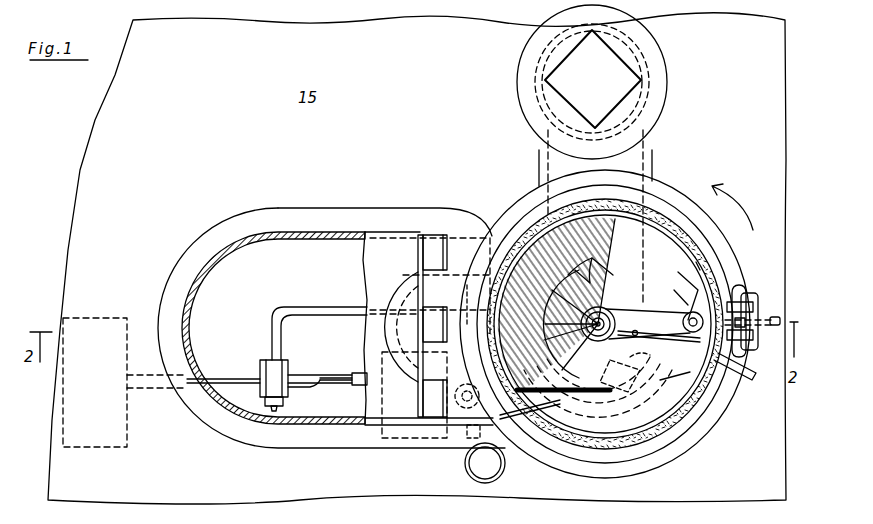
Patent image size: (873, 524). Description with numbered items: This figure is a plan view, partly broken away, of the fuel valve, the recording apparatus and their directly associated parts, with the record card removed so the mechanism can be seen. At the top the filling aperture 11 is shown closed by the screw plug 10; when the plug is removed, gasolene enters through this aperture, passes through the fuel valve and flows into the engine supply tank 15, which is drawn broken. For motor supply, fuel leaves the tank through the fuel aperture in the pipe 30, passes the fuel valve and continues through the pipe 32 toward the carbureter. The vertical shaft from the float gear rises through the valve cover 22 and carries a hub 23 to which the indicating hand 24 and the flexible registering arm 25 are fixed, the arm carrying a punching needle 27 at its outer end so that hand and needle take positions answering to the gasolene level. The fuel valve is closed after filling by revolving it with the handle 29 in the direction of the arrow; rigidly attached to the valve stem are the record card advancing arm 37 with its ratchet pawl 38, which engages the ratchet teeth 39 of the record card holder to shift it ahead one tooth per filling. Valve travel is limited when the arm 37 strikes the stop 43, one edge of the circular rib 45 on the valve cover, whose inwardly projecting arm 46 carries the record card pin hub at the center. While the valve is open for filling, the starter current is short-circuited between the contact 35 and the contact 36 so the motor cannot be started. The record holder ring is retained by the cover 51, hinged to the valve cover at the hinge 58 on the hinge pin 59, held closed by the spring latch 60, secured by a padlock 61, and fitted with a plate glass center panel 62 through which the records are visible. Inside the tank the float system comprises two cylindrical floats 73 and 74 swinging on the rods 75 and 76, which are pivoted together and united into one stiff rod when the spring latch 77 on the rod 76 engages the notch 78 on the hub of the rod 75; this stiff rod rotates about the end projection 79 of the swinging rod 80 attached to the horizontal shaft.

The screw plug 10 is at (593, 79).
The filling aperture 11 is at (633, 57).
The engine supply tank 15 is at (331, 328).
The valve cover 22 is at (694, 196).
The hub 23 is at (460, 400).
The indicating hand 24 is at (630, 345).
The registering arm 25 is at (649, 350).
The punching needle 27 is at (640, 384).
The handle 29 is at (480, 470).
The pipe 30 is at (777, 316).
The pipe 32 is at (752, 376).
The contact 35 is at (675, 381).
The contact 36 is at (596, 380).
The record card advancing arm 37 is at (642, 324).
The ratchet pawl 38 is at (696, 266).
The ratchet teeth 39 is at (672, 432).
The stop 43 is at (590, 283).
The circular rib 45 is at (590, 262).
The inwardly projecting arm 46 is at (570, 324).
The cover 51 is at (474, 250).
The hinge 58 is at (428, 235).
The hinge pin 59 is at (433, 235).
The spring latch 60 is at (740, 292).
The padlock 61 is at (760, 346).
The plate glass center panel 62 is at (604, 262).
The cylindrical float 73 is at (124, 382).
The cylindrical float 74 is at (431, 338).
The rod 75 is at (233, 378).
The rod 76 is at (350, 376).
The spring latch 77 is at (298, 387).
The notch 78 is at (268, 362).
The end projection 79 is at (274, 410).
The swinging rod 80 is at (344, 308).